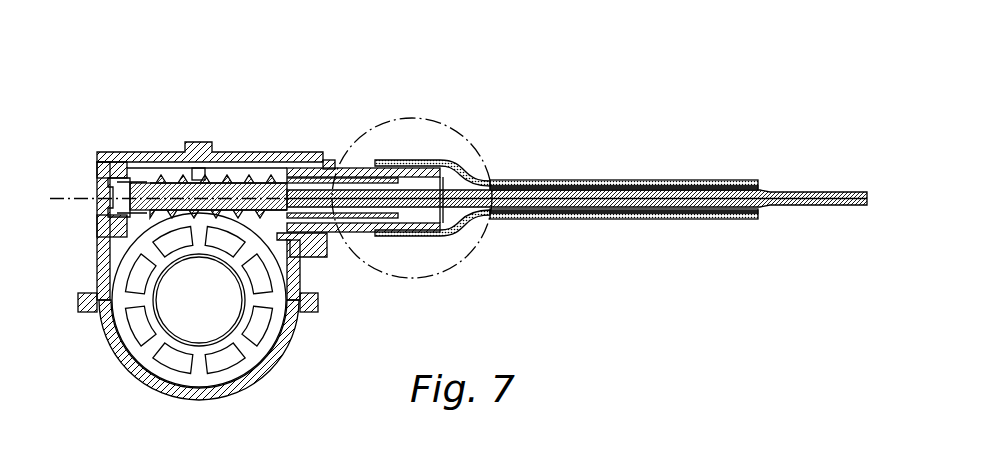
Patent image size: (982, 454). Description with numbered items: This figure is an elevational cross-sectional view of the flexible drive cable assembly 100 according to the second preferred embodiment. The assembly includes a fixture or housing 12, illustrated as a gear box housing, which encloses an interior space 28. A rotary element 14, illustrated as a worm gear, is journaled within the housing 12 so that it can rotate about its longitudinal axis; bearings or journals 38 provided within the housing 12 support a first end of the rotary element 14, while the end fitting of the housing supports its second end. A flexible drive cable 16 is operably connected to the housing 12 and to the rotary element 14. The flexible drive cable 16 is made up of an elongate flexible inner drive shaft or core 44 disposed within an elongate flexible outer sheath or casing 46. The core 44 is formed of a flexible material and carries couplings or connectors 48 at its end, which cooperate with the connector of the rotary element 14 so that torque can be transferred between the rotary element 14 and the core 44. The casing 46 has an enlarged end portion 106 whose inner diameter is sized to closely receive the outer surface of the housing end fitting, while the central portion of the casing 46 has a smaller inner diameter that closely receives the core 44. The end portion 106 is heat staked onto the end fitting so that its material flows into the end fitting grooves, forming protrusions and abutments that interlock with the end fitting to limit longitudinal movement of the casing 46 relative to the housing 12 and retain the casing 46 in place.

The flexible drive cable assembly 100 is at (315, 58).
The housing 12 is at (125, 153).
The bearings 38 is at (125, 178).
The interior space 28 is at (236, 170).
The rotary element 14 is at (362, 160).
The enlarged end portion 106 is at (418, 160).
The flexible drive cable 16 is at (600, 181).
The casing 46 is at (679, 186).
The core 44 is at (726, 187).
The connectors 48 is at (803, 210).